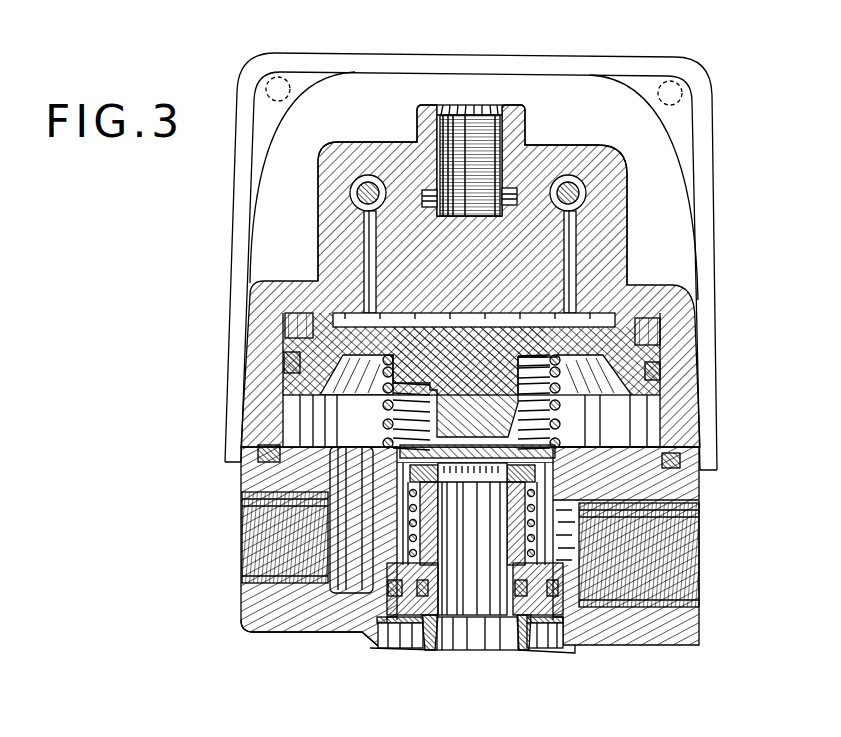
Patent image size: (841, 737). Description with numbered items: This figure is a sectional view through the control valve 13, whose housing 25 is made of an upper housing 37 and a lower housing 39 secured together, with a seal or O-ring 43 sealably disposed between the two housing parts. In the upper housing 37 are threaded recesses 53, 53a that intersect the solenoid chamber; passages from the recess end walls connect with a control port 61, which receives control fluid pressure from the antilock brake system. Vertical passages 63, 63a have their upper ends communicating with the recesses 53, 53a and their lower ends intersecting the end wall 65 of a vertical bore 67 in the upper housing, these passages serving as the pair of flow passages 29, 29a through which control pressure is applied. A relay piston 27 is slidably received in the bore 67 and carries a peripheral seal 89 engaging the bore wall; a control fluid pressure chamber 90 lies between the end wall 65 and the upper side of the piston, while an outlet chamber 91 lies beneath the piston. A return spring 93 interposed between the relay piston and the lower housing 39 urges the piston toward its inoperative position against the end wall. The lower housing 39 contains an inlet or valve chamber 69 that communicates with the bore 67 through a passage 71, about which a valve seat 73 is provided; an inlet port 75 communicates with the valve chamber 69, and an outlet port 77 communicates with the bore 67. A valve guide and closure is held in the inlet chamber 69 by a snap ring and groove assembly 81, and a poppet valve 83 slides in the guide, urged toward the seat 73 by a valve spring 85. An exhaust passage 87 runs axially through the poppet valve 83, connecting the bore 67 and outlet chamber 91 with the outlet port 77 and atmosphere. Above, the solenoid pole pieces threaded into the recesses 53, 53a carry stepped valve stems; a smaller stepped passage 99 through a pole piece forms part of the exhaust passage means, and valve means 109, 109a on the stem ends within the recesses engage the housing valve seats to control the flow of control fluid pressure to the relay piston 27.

The control valve 13 is at (623, 45).
The housing 25 is at (210, 407).
The relay piston 27 is at (614, 371).
The flow passage 29 is at (417, 198).
The flow passage 29a is at (548, 180).
The upper housing 37 is at (265, 298).
The lower housing 39 is at (256, 616).
The seal or O-ring 43 is at (264, 460).
The threaded recess 53 is at (344, 176).
The threaded recess 53a is at (590, 197).
The control port 61 is at (487, 108).
The vertical passage 63 is at (362, 247).
The vertical passage 63a is at (577, 254).
The end wall 65 is at (597, 318).
The vertical bore 67 is at (670, 438).
The inlet or valve chamber 69 is at (699, 486).
The passage 71 is at (507, 452).
The valve seat 73 is at (548, 424).
The inlet port 75 is at (680, 603).
The outlet port 77 is at (242, 569).
The snap ring and groove assembly 81 is at (378, 648).
The poppet valve 83 is at (424, 517).
The valve spring 85 is at (507, 544).
The exhaust passage 87 is at (512, 587).
The peripheral seal 89 is at (287, 366).
The control fluid pressure chamber 90 is at (355, 314).
The outlet chamber 91 is at (471, 494).
The return spring 93 is at (561, 410).
The smaller stepped passage 99 is at (428, 653).
The valve means 109 is at (343, 185).
The valve means 109a is at (585, 183).